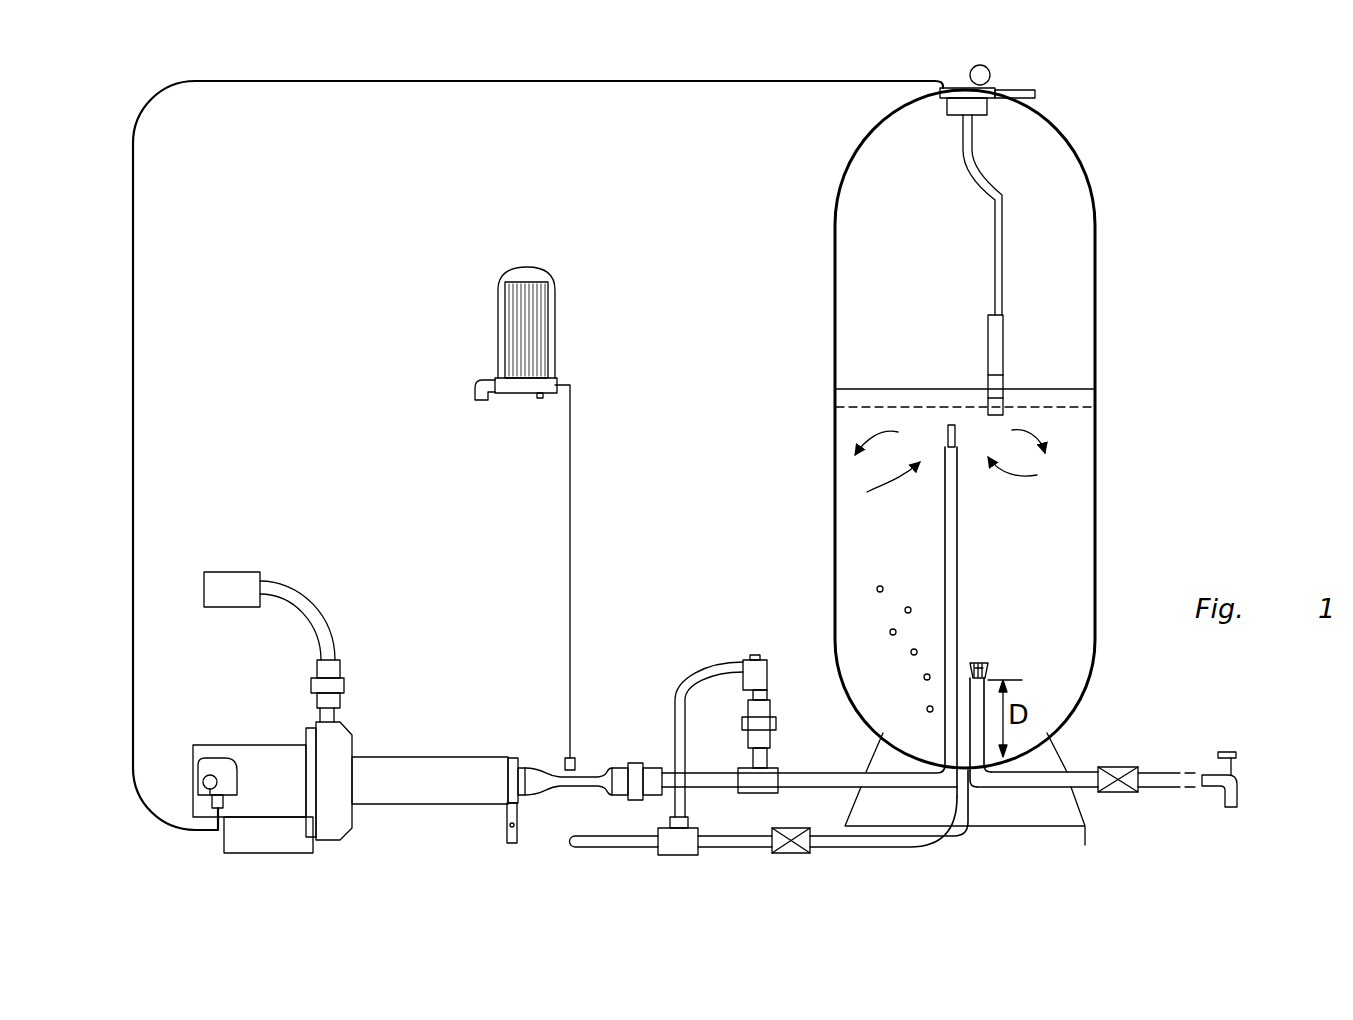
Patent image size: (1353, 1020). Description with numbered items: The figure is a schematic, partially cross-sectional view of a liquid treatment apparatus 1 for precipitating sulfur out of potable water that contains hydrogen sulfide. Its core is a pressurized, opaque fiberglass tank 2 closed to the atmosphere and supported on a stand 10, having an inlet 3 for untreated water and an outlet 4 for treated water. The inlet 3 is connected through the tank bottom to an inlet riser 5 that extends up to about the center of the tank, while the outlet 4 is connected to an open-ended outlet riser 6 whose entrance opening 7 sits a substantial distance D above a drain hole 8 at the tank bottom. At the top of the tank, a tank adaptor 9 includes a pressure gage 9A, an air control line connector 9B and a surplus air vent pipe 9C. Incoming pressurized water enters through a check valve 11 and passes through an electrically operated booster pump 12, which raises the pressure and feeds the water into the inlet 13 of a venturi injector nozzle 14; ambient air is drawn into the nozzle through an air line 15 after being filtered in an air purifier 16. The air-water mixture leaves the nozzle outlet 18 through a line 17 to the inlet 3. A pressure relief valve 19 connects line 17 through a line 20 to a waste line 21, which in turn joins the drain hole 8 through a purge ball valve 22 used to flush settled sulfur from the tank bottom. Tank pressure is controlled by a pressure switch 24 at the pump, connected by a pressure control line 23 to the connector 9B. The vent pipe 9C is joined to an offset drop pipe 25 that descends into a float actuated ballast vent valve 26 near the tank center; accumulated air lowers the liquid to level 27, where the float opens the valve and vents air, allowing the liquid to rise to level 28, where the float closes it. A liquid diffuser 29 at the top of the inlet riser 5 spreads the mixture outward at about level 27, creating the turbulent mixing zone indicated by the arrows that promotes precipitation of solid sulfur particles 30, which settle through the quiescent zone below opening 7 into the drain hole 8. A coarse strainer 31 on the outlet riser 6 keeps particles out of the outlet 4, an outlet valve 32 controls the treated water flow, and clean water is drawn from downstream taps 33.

The apparatus 1 is at (1113, 110).
The tank 2 is at (1097, 297).
The inlet 3 is at (942, 779).
The outlet 4 is at (990, 780).
The inlet riser 5 is at (945, 555).
The outlet riser 6 is at (970, 695).
The entrance opening 7 is at (986, 672).
The drain hole 8 is at (962, 800).
The tank adaptor 9 is at (955, 102).
The pressure gage 9A is at (983, 65).
The air control line connector 9B is at (940, 92).
The surplus air vent pipe 9C is at (1037, 95).
The stand 10 is at (1082, 826).
The check valve 11 is at (238, 572).
The booster pump 12 is at (340, 742).
The inlet of venturi injector nozzle 13 is at (530, 770).
The venturi injector nozzle 14 is at (547, 795).
The air line 15 is at (570, 505).
The air purifier 16 is at (555, 378).
The line 17 is at (795, 770).
The outlet of nozzle 18 is at (612, 768).
The pressure relief valve 19 is at (750, 657).
The line 20 is at (697, 675).
The waste line 21 is at (608, 850).
The purge ball valve 22 is at (800, 854).
The pressure control line 23 is at (345, 81).
The pressure switch 24 is at (215, 760).
The offset drop pipe 25 is at (993, 242).
The float actuated ballast vent valve 26 is at (988, 345).
The level 27 is at (1080, 410).
The level 28 is at (1080, 389).
The liquid diffuser 29 is at (947, 428).
The sulfur particles 30 is at (926, 677).
The coarse strainer 31 is at (988, 664).
The outlet valve 32 is at (1112, 767).
The taps 33 is at (1230, 808).